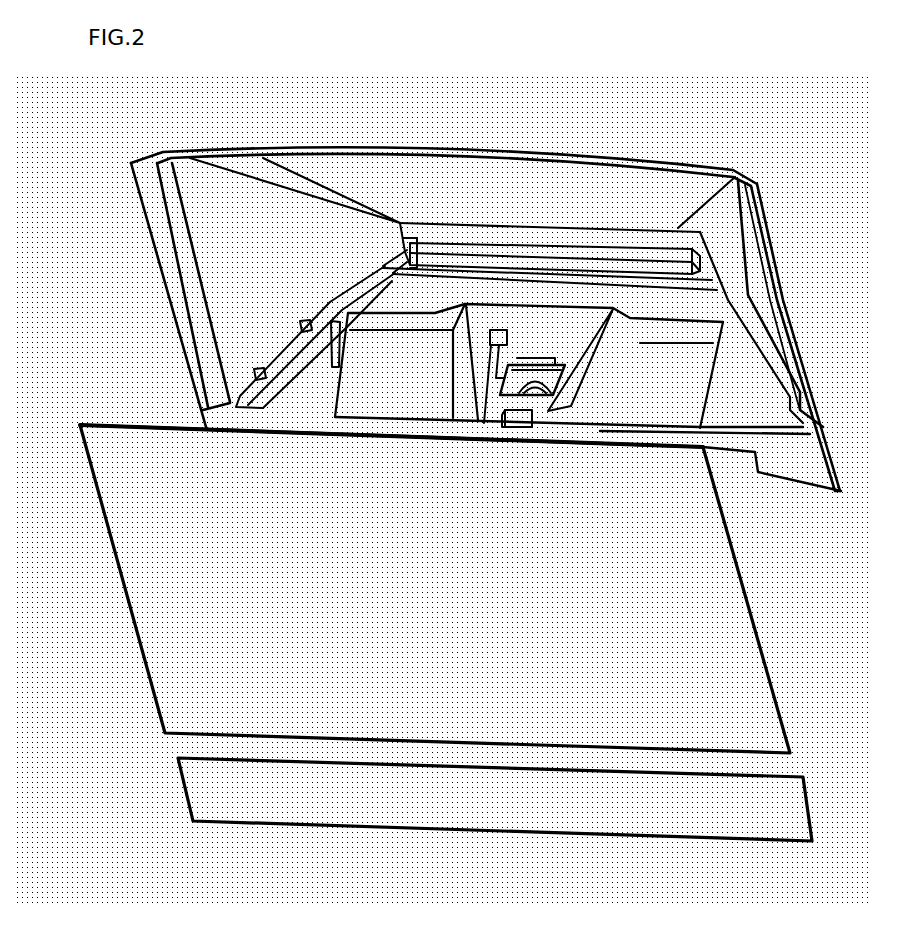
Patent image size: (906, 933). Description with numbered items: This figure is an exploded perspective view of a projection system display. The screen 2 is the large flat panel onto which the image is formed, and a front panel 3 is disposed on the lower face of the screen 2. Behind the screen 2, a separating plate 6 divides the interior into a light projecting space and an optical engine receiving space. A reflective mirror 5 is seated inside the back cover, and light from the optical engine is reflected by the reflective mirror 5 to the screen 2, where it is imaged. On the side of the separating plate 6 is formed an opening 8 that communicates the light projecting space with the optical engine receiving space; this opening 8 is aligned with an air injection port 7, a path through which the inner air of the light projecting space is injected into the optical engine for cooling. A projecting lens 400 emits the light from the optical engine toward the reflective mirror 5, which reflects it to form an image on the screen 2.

The screen 2 is at (107, 468).
The front panel 3 is at (297, 808).
The reflective mirror 5 is at (512, 175).
The separating plate 6 is at (690, 383).
The air injection port 7 is at (490, 348).
The opening 8 is at (497, 332).
The projecting lens 400 is at (561, 380).